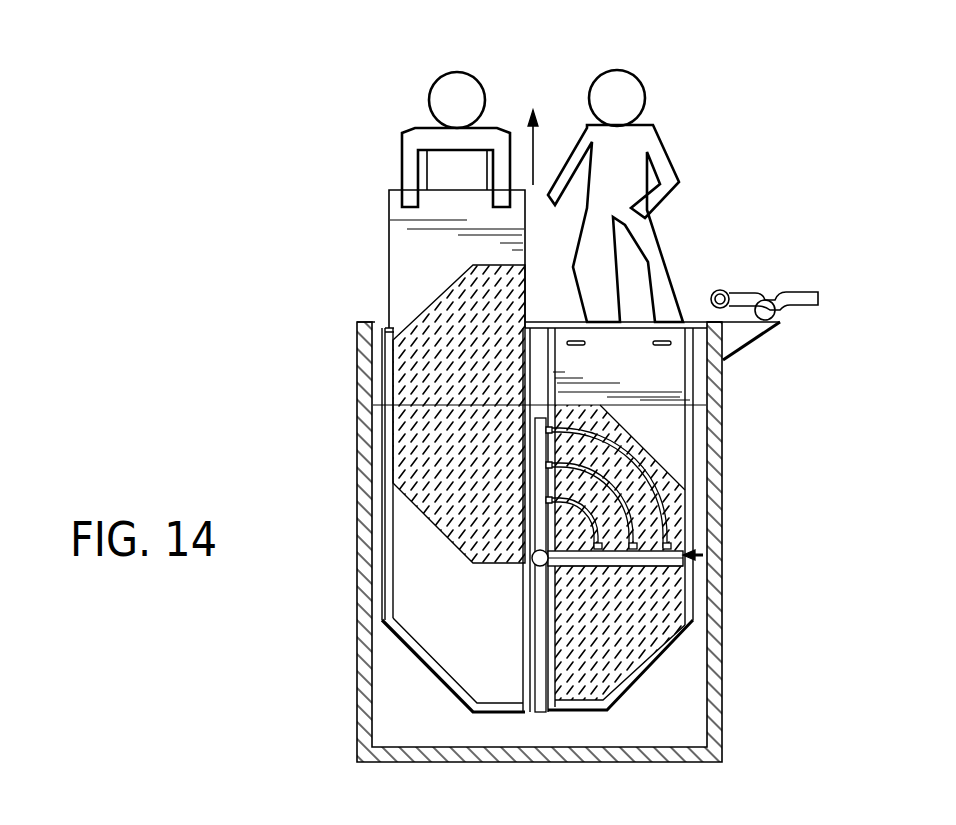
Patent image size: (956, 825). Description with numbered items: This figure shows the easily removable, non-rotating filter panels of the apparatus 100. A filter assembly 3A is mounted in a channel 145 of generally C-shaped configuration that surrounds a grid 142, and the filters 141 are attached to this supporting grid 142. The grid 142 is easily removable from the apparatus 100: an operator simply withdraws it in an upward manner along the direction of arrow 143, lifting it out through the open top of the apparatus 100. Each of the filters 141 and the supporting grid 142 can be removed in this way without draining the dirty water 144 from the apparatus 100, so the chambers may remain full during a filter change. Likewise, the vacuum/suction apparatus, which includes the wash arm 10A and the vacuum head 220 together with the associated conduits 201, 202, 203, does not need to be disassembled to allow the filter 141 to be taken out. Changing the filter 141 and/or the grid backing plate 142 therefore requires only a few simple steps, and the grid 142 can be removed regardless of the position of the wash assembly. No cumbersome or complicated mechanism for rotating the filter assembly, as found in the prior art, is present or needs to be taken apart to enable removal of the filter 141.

The apparatus 100 is at (327, 607).
The filter 141 is at (418, 502).
The grid 142 is at (389, 211).
The arrow 143 is at (537, 124).
The dirty water 144 is at (667, 369).
The channel 145 is at (450, 690).
The filter assembly 3A is at (450, 293).
The conduit 201 is at (587, 501).
The conduit 202 is at (630, 504).
The conduit 203 is at (663, 483).
The wash arm 10A is at (703, 555).
The vacuum head 220 is at (653, 567).